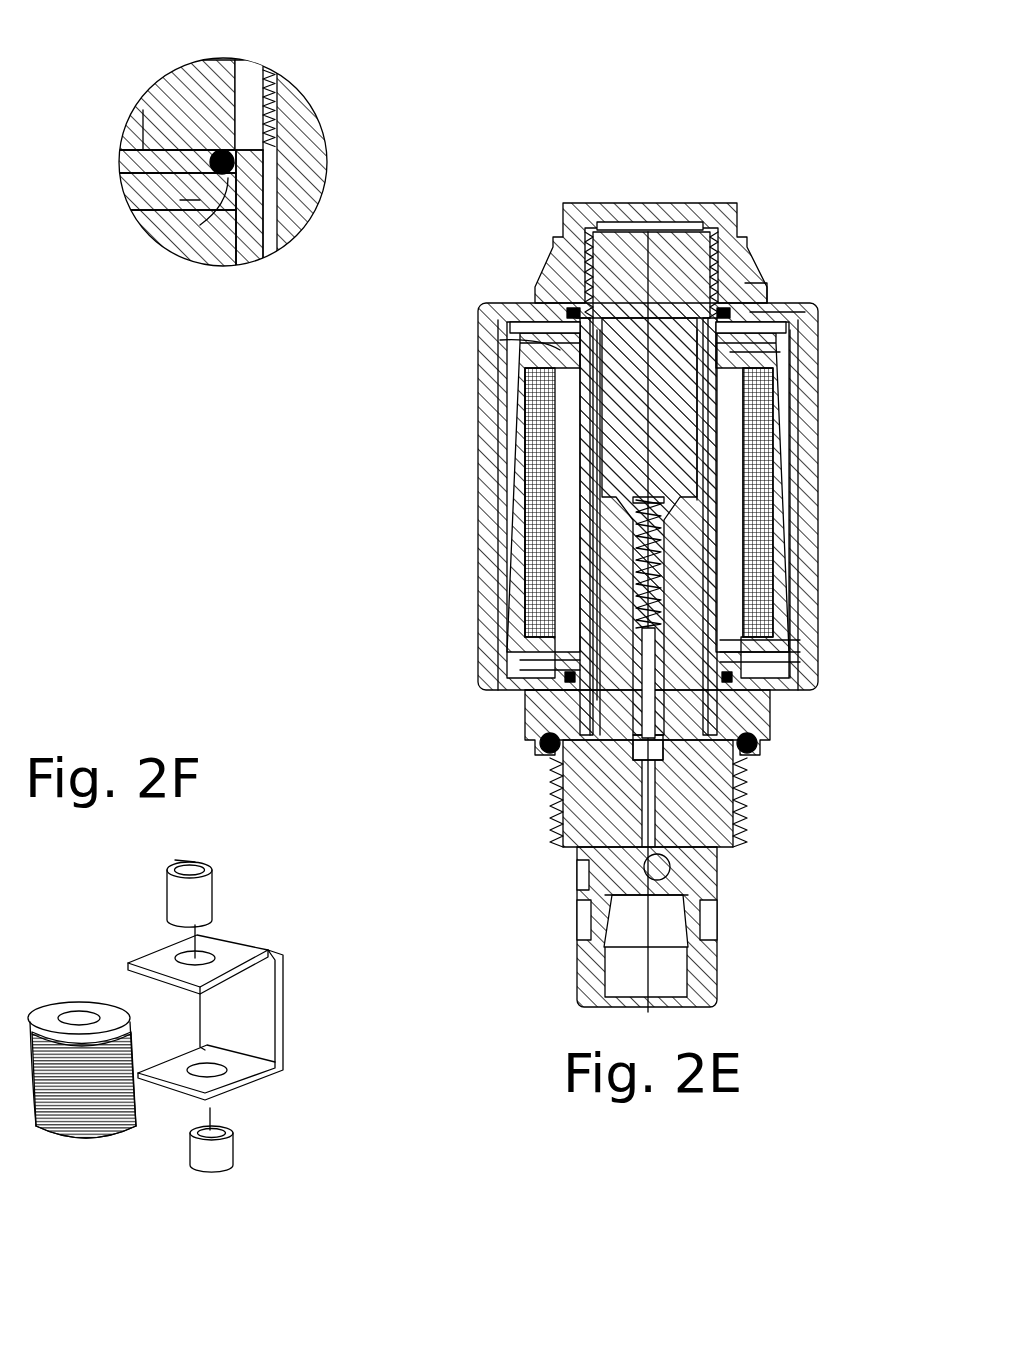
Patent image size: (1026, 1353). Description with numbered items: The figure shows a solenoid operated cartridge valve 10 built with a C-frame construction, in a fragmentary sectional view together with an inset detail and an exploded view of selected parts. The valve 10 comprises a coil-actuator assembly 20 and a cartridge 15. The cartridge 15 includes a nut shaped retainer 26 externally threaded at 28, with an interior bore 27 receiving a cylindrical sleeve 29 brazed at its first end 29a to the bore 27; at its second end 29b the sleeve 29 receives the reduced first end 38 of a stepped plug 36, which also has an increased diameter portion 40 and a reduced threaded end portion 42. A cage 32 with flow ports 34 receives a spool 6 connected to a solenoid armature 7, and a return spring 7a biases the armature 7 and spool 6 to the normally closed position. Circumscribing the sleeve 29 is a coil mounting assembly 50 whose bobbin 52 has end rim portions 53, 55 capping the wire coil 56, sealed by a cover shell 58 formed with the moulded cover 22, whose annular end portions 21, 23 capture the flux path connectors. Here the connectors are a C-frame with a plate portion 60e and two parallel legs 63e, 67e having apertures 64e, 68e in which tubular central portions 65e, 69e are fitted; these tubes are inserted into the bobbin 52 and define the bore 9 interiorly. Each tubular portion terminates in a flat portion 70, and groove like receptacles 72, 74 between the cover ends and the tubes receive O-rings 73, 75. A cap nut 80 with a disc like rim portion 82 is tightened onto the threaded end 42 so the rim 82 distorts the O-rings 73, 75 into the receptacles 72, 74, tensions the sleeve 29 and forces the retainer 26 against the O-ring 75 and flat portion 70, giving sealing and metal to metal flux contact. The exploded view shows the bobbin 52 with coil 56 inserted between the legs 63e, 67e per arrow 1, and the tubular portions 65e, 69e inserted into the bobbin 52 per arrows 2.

In FIG. 2E, the solenoid operated cartridge valve 10 is at (735, 178).
In FIG. 2E, the threaded end portion 42 is at (660, 268).
In FIG. 2E, the cap nut 80 is at (742, 215).
In FIG. 2E, the increased diameter portion 40 is at (667, 378).
In FIG. 2E, the rim portion 82 is at (757, 300).
In FIG. 2E, the annular end portion 21 is at (783, 312).
In FIG. 2E, the leg 63e is at (753, 335).
In FIG. 2F, the leg 63e is at (240, 965).
In FIG. 2E, the end rim portion 55 is at (753, 356).
In FIG. 2F, the end rim portion 55 is at (115, 1015).
In FIG. 2E, the coil-actuator assembly 20 is at (699, 496).
In FIG. 2E, the plate portion 60e is at (790, 448).
In FIG. 2F, the plate portion 60e is at (276, 1015).
In FIG. 2E, the cover shell 58 is at (775, 476).
In FIG. 2E, the wire coil 56 is at (753, 510).
In FIG. 2F, the wire coil 56 is at (76, 1102).
In FIG. 2E, the coil-actuator cover 22 is at (806, 545).
In FIG. 2E, the bobbin 52 is at (728, 515).
In FIG. 2F, the bobbin 52 is at (90, 1135).
In FIG. 2E, the end rim portion 53 is at (756, 615).
In FIG. 2E, the leg 67e is at (766, 633).
In FIG. 2F, the leg 67e is at (245, 1083).
In FIG. 2E, the aperture 68e is at (741, 641).
In FIG. 2E, the annular end portion 23 is at (792, 664).
In FIG. 2E, the nut shaped retainer 26 is at (760, 678).
In FIG. 2E, the bore 27 is at (716, 697).
In FIG. 2E, the external threads 28 is at (742, 810).
In FIG. 2E, the cartridge 15 is at (750, 852).
In FIG. 2E, the flow ports 34 is at (712, 892).
In FIG. 2E, the O-ring 73 is at (572, 312).
In FIG. 2E, the tubular central portion 65e is at (582, 318).
In FIG. 2F, the tubular central portion 65e is at (198, 895).
In FIG. 2E, the bore 9 is at (602, 358).
In FIG. 2F, the bore 9 is at (175, 860).
In FIG. 2E, the stepped plug 36 is at (667, 446).
In FIG. 2E, the second end of sleeve 29b is at (605, 441).
In FIG. 2E, the first end of plug 38 is at (626, 468).
In FIG. 2E, the coil mounting assembly 50 is at (512, 498).
In FIG. 2F, the coil mounting assembly 50 is at (94, 1048).
In FIG. 2E, the return spring 7a is at (632, 506).
In FIG. 2E, the cylindrical sleeve 29 is at (640, 567).
In FIG. 2E, the tubular central portion 69e is at (576, 662).
In FIG. 2F, the tubular central portion 69e is at (220, 1152).
In FIG. 2E, the groove like receptacle 74 is at (556, 662).
In FIG. 2E, the O-ring 75 is at (540, 700).
In FIG. 2E, the first end of sleeve 29a is at (572, 760).
In FIG. 2E, the solenoid armature 7 is at (608, 700).
In FIG. 2E, the spool 6 is at (612, 906).
In FIG. 2E, the cage 32 is at (582, 941).
In FIG. 2E, the groove like receptacle 72 is at (186, 110).
In FIG. 2E, the flat portion 70 is at (275, 140).
In FIG. 2E, the aperture 64e is at (200, 200).
In FIG. 2F, the arrow 2 is at (157, 940).
In FIG. 2F, the arrow 1 is at (188, 1020).